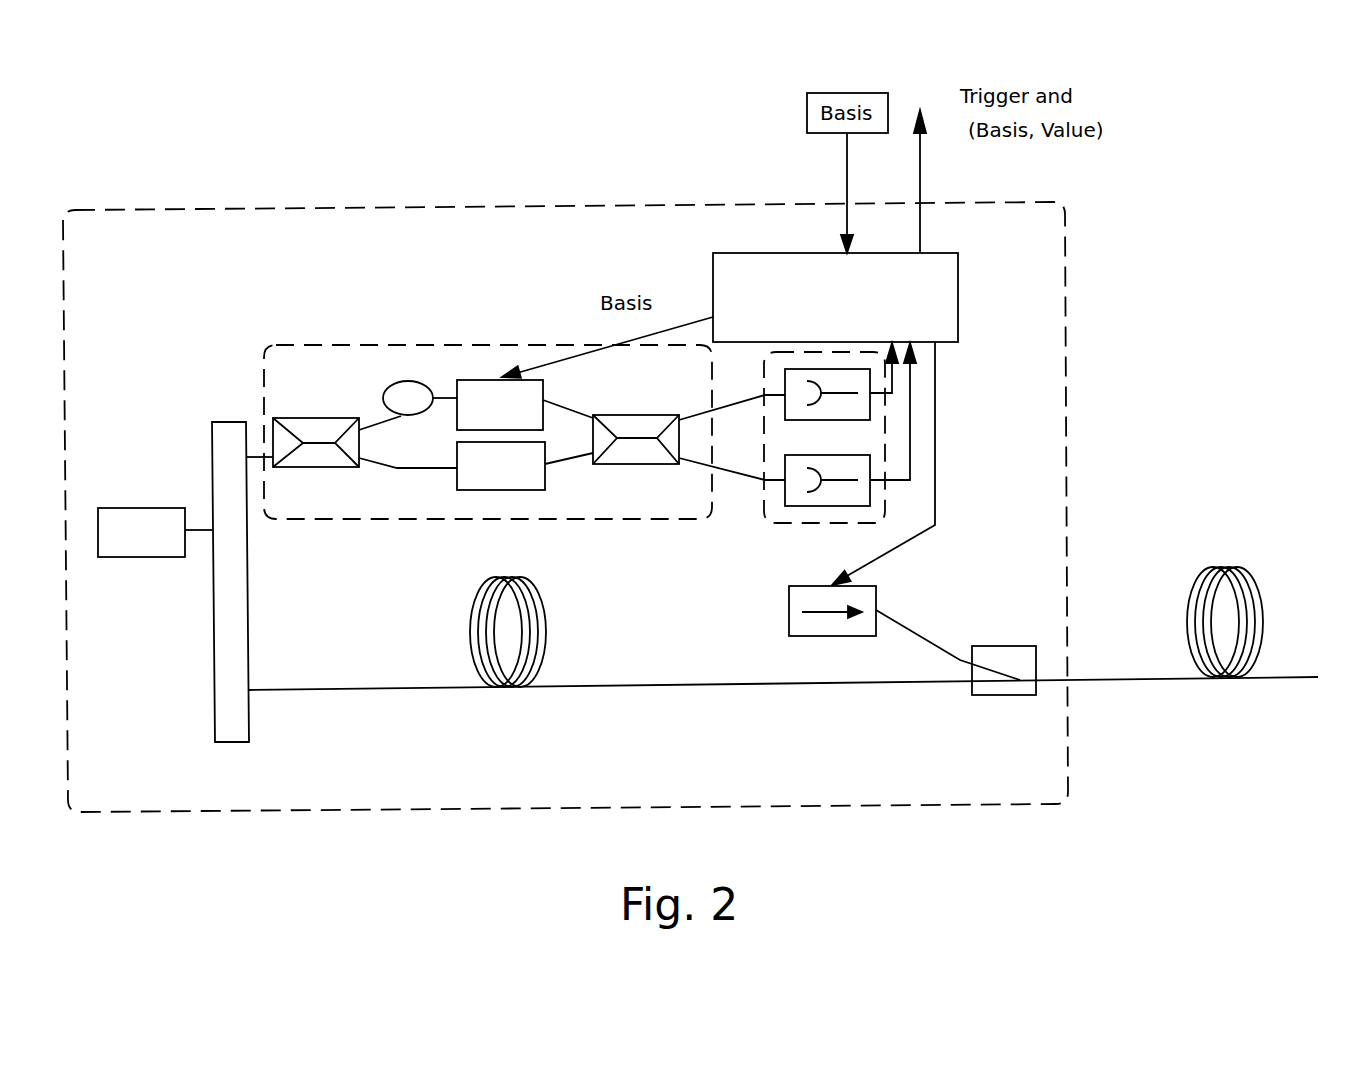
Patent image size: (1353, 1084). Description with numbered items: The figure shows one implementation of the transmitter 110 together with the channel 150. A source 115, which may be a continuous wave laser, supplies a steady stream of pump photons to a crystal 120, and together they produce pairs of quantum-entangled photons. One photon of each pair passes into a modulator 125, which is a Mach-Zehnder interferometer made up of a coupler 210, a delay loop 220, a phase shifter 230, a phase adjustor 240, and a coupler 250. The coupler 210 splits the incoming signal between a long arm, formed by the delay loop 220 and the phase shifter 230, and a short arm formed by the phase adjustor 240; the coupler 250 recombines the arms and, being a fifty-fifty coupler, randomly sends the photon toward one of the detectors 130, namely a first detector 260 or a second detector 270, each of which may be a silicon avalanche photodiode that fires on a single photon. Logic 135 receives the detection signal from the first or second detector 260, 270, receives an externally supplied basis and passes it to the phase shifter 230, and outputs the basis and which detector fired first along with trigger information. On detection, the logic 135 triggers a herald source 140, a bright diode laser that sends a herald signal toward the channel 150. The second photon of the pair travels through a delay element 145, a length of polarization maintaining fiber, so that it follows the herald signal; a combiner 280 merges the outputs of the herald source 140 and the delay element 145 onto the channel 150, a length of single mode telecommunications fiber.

The transmitter 110 is at (368, 808).
The source 115 is at (135, 510).
The crystal 120 is at (230, 428).
The modulator 125 is at (367, 345).
The detectors 130 is at (773, 520).
The logic 135 is at (947, 297).
The herald source 140 is at (827, 627).
The delay element 145 is at (507, 658).
The channel 150 is at (1227, 597).
The coupler 210 is at (328, 428).
The delay loop 220 is at (412, 388).
The phase shifter 230 is at (540, 383).
The phase adjustor 240 is at (460, 468).
The coupler 250 is at (630, 452).
The first detector 260 is at (863, 410).
The second detector 270 is at (865, 458).
The combiner 280 is at (1007, 657).